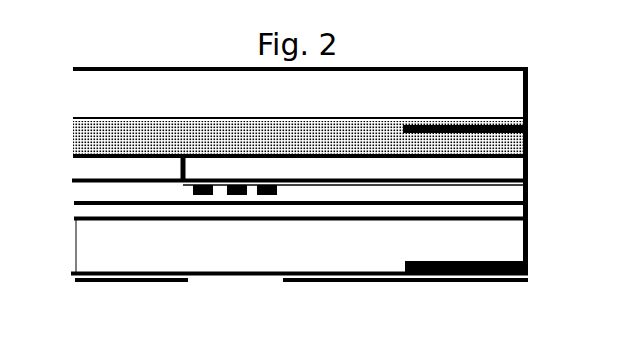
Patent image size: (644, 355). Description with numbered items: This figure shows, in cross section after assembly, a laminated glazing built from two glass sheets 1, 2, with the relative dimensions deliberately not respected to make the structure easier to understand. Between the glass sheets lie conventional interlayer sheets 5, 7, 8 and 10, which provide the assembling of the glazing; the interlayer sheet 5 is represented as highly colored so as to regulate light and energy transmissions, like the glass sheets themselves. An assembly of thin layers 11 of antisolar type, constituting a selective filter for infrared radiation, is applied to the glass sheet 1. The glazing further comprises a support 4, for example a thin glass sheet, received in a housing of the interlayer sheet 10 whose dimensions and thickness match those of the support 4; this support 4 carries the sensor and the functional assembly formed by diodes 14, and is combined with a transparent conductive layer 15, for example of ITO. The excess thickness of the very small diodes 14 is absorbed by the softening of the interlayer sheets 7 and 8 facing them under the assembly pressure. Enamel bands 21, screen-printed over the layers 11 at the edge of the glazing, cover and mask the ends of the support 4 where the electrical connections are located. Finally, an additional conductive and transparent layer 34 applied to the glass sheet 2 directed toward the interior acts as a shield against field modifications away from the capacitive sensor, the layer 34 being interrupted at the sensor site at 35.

The glass sheet 1 is at (353, 100).
The glass sheet 2 is at (365, 260).
The support 4 is at (515, 170).
The interlayer sheet 5 is at (517, 147).
The interlayer sheet 7 is at (90, 195).
The interlayer sheet 8 is at (82, 212).
The interlayer sheet 10 is at (75, 167).
The thin layers 11 is at (75, 122).
The diodes 14 is at (277, 192).
The transparent conductive layer 15 is at (510, 188).
The enamel bands 21 is at (528, 126).
The additional layer 34 is at (188, 281).
The interruption site 35 is at (248, 281).